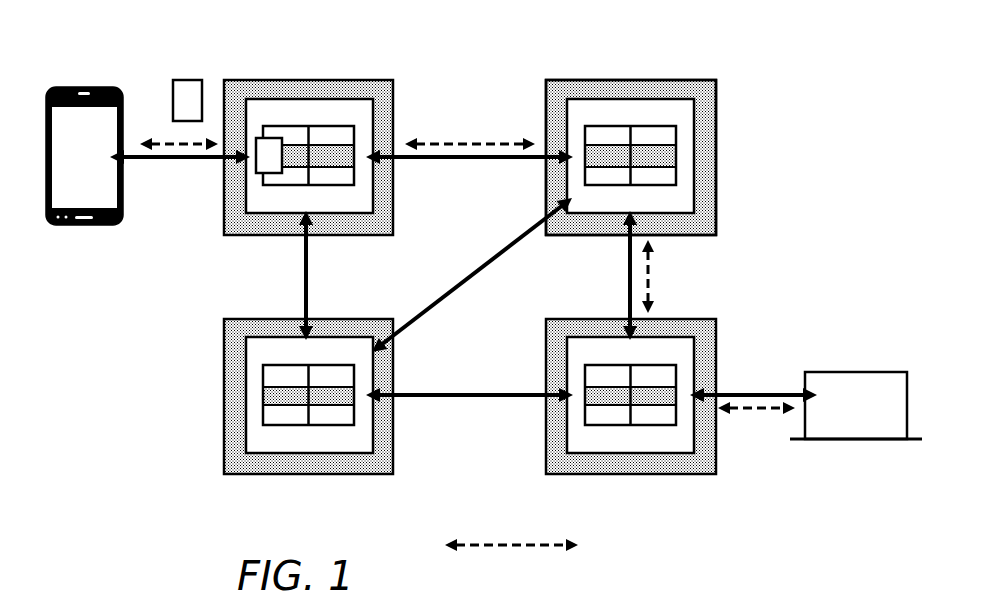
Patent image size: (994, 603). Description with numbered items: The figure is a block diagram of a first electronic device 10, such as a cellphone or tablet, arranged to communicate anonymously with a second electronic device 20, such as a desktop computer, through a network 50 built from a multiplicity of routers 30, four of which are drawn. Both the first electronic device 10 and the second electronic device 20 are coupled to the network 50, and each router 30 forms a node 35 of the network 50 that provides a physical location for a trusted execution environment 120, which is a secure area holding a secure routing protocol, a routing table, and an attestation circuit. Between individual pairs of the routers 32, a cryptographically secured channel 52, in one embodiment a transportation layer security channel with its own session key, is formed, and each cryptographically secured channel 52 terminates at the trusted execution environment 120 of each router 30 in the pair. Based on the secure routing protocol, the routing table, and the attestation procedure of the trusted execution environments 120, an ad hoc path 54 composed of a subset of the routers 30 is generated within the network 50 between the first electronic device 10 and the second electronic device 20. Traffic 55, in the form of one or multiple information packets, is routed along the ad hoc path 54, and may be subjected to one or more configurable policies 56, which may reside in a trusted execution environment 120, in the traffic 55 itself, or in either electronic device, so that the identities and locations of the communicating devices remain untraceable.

The first electronic device 10 is at (85, 87).
The second electronic device 20 is at (850, 372).
The router 30 is at (234, 92).
The individual pair of routers 32 is at (477, 60).
The node 35 is at (355, 137).
The network 50 is at (619, 72).
The cryptographically secured channel 52 is at (463, 160).
The ad hoc path 54 is at (500, 538).
The traffic 55 is at (188, 80).
The configurable policy 56 is at (268, 138).
The trusted execution environment 120 is at (544, 274).